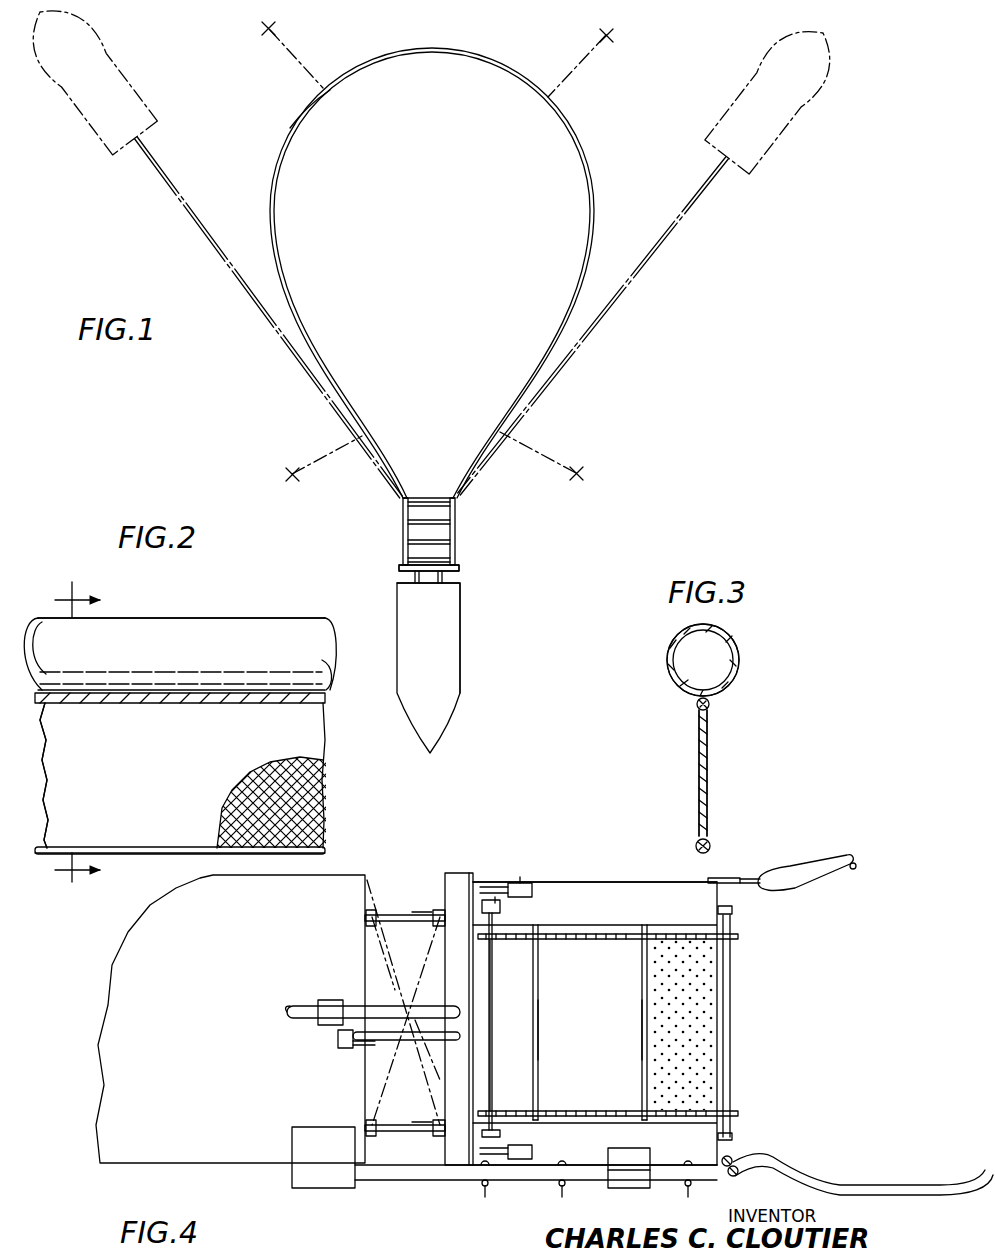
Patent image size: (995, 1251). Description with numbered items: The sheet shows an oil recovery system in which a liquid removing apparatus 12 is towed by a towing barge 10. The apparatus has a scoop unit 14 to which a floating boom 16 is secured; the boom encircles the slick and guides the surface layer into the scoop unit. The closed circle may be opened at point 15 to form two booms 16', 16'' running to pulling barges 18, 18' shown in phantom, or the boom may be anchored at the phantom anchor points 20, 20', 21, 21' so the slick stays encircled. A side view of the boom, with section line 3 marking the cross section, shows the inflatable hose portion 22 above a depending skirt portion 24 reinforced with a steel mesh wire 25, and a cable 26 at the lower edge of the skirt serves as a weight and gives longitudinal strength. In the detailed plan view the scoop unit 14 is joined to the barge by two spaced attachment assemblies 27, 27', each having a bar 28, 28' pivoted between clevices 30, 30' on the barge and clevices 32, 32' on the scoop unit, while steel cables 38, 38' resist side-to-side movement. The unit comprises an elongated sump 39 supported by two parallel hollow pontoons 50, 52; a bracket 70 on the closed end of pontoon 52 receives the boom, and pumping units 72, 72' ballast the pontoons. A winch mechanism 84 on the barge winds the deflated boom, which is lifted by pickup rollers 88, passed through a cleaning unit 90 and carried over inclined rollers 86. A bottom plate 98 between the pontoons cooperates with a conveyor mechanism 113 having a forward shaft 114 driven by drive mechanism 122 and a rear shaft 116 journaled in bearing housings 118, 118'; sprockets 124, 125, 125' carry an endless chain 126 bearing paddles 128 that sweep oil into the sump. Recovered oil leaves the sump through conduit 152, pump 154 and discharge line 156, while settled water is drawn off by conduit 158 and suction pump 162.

In FIG. 2, the section line 3— 3 is at (75, 737).
In FIG. 1, the towing barge 10 is at (458, 640).
In FIG. 4, the towing barge 10 is at (205, 1029).
In FIG. 1, the liquid removing apparatus 12 is at (478, 504).
In FIG. 1, the scoop unit 14 is at (402, 540).
In FIG. 1, the point 15 is at (432, 50).
In FIG. 1, the floating boom 16 is at (285, 109).
In FIG. 2, the floating boom 16 is at (180, 710).
In FIG. 3, the floating boom 16 is at (678, 730).
In FIG. 4, the floating boom 16 is at (863, 1033).
In FIG. 1, the boom 16' is at (603, 326).
In FIG. 1, the boom 16'' is at (269, 317).
In FIG. 1, the pulling barge 18 is at (767, 103).
In FIG. 1, the pulling barge 18' is at (96, 83).
In FIG. 1, the anchor point 20 is at (600, 59).
In FIG. 1, the anchor point 20' is at (549, 456).
In FIG. 1, the anchor point 21 is at (274, 52).
In FIG. 1, the anchor point 21' is at (316, 458).
In FIG. 2, the hose portion 22 is at (243, 630).
In FIG. 3, the hose portion 22 is at (740, 660).
In FIG. 2, the skirt portion 24 is at (293, 743).
In FIG. 3, the skirt portion 24 is at (712, 772).
In FIG. 2, the steel mesh wire 25 is at (300, 795).
In FIG. 2, the cable 26 is at (318, 848).
In FIG. 3, the cable 26 is at (699, 843).
In FIG. 2, the attachment assembly 27 is at (198, 706).
In FIG. 3, the attachment assembly 27 is at (730, 707).
In FIG. 4, the attachment assembly 27 is at (417, 1106).
In FIG. 4, the attachment assembly 27' is at (419, 884).
In FIG. 4, the bar 28 is at (405, 1146).
In FIG. 4, the bar 28' is at (405, 904).
In FIG. 4, the clevis 30 is at (354, 1108).
In FIG. 4, the clevis 30' is at (353, 902).
In FIG. 4, the clevis 32 is at (431, 1143).
In FIG. 4, the clevis 32' is at (424, 928).
In FIG. 4, the steel cable 38 is at (406, 1004).
In FIG. 4, the steel cable 38' is at (403, 1002).
In FIG. 4, the sump 39 is at (464, 874).
In FIG. 4, the pontoon 50 is at (600, 1146).
In FIG. 4, the pontoon 52 is at (640, 911).
In FIG. 4, the bracket 70 is at (733, 877).
In FIG. 4, the pumping unit 72 is at (520, 1140).
In FIG. 4, the pumping unit 72' is at (529, 911).
In FIG. 4, the winch mechanism 84 is at (302, 1148).
In FIG. 4, the inclined rollers 86 is at (584, 1191).
In FIG. 4, the pickup rollers 88 is at (722, 1178).
In FIG. 4, the cleaning unit 90 is at (632, 1188).
In FIG. 4, the bottom plate 98 is at (606, 1033).
In FIG. 4, the conveyor mechanism 113 is at (735, 1022).
In FIG. 4, the forward shaft 114 is at (492, 1044).
In FIG. 4, the rear shaft 116 is at (730, 1051).
In FIG. 4, the bearing housing 118 is at (754, 1137).
In FIG. 4, the bearing housing 118' is at (753, 913).
In FIG. 4, the drive mechanism 122 is at (500, 883).
In FIG. 4, the sprocket 124 is at (494, 942).
In FIG. 4, the sprocket 125 is at (634, 1107).
In FIG. 4, the sprocket 125' is at (643, 939).
In FIG. 4, the endless chain 126 is at (594, 942).
In FIG. 4, the paddles 128 is at (640, 1052).
In FIG. 4, the conduit 152 is at (458, 1013).
In FIG. 4, the pump 154 is at (330, 1000).
In FIG. 4, the discharge line 156 is at (290, 1007).
In FIG. 4, the conduit 158 is at (406, 1053).
In FIG. 4, the suction pump 162 is at (337, 1042).